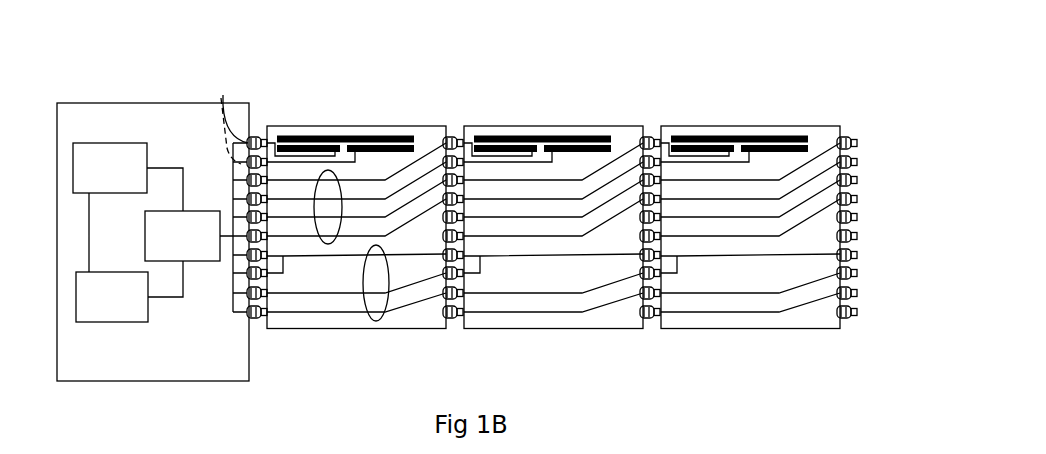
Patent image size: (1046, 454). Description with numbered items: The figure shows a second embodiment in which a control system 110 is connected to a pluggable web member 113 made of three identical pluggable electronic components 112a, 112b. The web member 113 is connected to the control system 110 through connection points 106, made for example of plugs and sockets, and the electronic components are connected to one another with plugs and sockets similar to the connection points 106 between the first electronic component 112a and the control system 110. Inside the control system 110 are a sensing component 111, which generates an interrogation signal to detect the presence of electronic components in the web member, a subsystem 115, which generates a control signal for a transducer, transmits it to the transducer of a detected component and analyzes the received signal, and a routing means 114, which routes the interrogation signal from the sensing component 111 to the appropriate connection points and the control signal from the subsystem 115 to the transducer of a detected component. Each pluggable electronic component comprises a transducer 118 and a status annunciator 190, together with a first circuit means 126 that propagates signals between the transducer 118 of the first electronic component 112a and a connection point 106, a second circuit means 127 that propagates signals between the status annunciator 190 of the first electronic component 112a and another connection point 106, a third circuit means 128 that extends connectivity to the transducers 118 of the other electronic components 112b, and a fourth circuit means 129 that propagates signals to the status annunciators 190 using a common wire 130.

The connection points 106 is at (228, 193).
The control system 110 is at (153, 270).
The sensing component 111 is at (110, 168).
The pluggable web member 113 is at (608, 350).
The routing means 114 is at (182, 236).
The subsystem 115 is at (112, 297).
The transducer 118 is at (683, 130).
The first electronic component 112a is at (323, 123).
The other electronic components 112b is at (757, 127).
The first circuit means 126 is at (275, 139).
The second circuit means 127 is at (281, 280).
The third circuit means 128 is at (332, 248).
The fourth circuit means 129 is at (377, 323).
The wire 130 is at (407, 247).
The status annunciator 190 is at (678, 282).